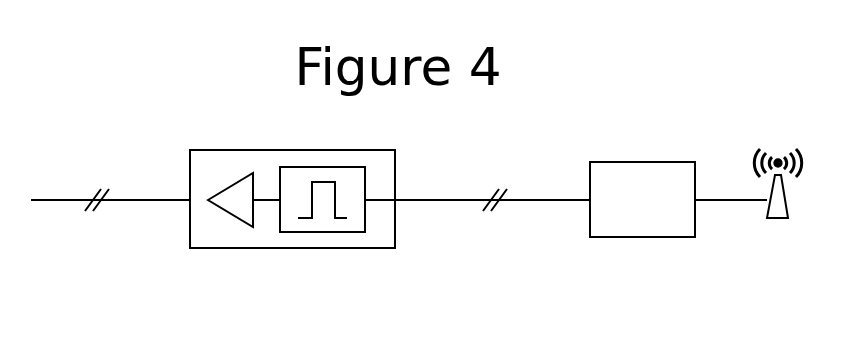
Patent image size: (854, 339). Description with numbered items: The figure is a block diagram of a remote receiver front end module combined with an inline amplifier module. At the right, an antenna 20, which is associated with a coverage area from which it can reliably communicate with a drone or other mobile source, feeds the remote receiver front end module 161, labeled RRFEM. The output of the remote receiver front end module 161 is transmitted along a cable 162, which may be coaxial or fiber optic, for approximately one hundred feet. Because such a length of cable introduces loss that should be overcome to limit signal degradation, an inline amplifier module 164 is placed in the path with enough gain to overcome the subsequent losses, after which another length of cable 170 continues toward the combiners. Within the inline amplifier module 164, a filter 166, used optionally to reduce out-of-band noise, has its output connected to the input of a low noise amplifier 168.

The signal line 170 is at (60, 200).
The inline amplifier module 164 is at (300, 150).
The low noise amplifier 168 is at (234, 219).
The filter 166 is at (313, 232).
The cable 162 is at (450, 200).
The remote receiver front end module 161 is at (612, 162).
The antenna 20 is at (788, 198).